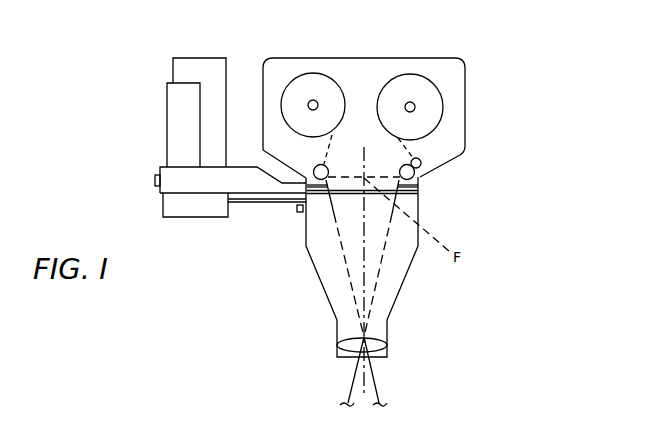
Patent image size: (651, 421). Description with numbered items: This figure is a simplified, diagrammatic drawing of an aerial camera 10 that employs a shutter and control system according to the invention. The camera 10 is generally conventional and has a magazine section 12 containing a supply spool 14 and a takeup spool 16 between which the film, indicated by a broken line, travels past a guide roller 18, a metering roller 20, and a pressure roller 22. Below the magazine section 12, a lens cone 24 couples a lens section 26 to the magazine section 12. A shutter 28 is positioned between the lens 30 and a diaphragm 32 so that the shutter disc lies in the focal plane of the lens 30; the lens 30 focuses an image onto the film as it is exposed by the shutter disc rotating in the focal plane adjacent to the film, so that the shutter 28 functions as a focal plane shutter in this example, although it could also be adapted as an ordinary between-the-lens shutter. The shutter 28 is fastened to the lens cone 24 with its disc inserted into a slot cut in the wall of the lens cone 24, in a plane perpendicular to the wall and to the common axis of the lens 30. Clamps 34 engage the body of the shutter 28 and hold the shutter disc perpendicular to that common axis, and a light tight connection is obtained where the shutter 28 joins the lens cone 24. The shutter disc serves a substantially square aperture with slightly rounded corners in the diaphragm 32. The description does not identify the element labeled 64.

The aerial camera 10 is at (413, 60).
The magazine section 12 is at (465, 128).
The supply spool 14 is at (320, 73).
The takeup spool 16 is at (444, 107).
The guide roller 18 is at (314, 168).
The metering roller 20 is at (420, 177).
The pressure roller 22 is at (421, 162).
The lens cone 24 is at (407, 280).
The lens section 26 is at (387, 350).
The shutter 28 is at (157, 173).
The lens 30 is at (373, 340).
The diaphragm 32 is at (420, 177).
The clamps 34 is at (297, 180).
The strand 64 is at (355, 197).